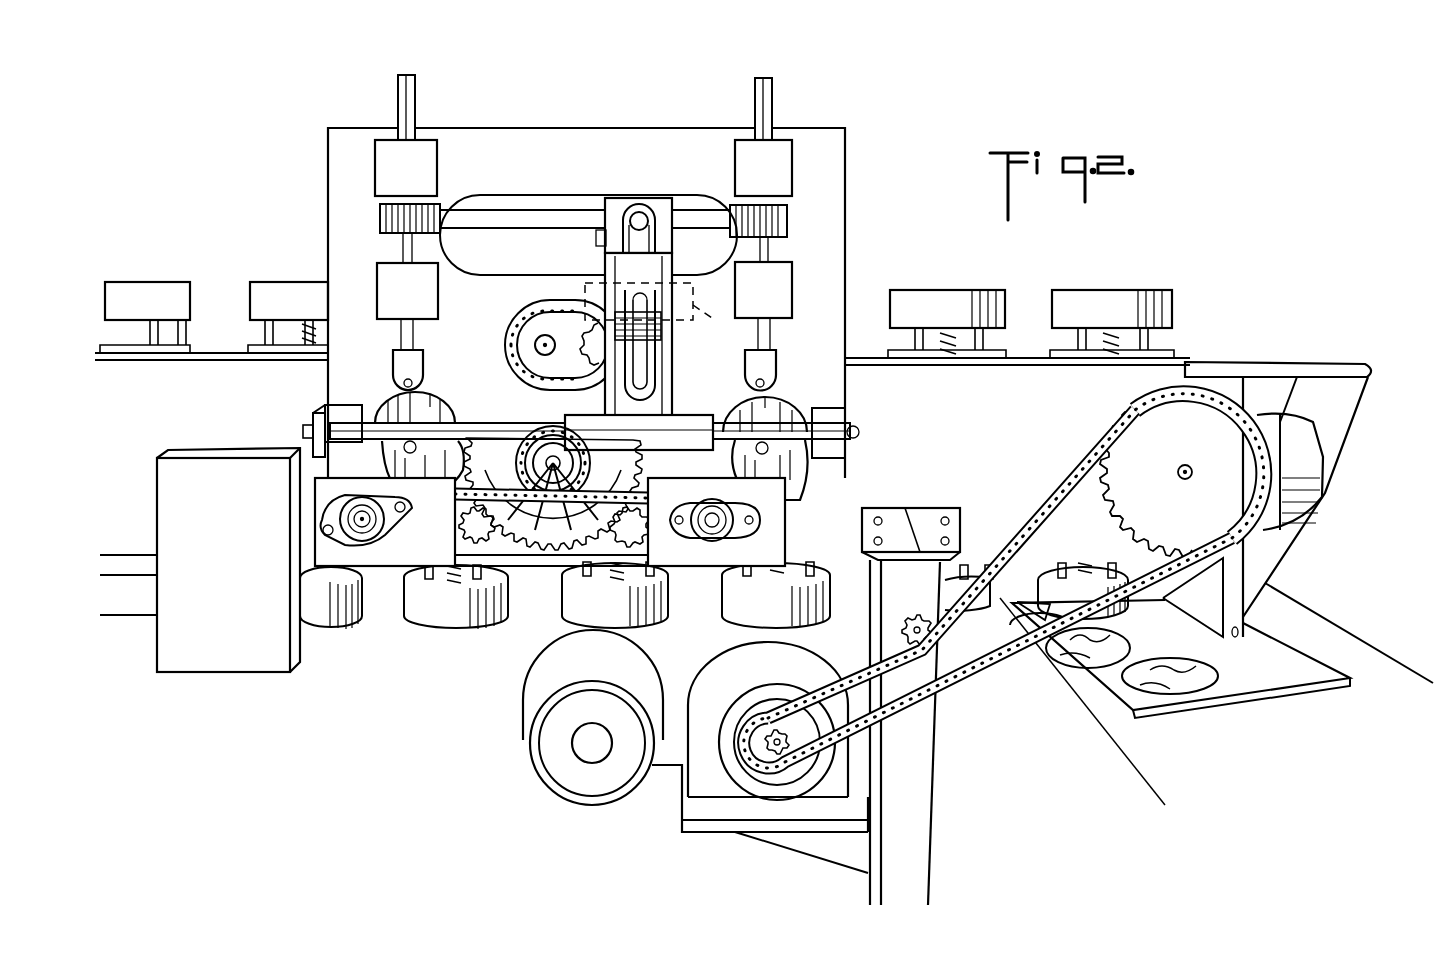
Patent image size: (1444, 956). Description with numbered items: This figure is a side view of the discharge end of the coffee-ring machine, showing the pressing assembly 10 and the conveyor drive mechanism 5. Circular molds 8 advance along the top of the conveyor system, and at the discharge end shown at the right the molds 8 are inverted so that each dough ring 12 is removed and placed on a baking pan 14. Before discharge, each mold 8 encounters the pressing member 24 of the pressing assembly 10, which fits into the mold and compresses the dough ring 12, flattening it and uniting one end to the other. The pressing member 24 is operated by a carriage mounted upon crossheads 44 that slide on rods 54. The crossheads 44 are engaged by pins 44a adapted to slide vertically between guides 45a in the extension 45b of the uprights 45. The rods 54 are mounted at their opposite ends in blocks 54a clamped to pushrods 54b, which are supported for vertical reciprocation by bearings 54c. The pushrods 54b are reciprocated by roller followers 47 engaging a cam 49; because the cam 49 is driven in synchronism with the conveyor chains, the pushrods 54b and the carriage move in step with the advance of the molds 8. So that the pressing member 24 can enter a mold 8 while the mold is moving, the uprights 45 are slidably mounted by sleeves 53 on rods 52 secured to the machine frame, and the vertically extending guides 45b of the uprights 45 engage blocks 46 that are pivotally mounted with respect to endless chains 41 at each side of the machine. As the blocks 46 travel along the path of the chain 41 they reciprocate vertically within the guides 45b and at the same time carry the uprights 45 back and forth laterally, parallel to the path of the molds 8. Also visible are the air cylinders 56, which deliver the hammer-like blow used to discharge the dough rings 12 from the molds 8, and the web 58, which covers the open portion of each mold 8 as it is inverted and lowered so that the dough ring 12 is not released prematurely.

The drive mechanism 5 is at (970, 676).
The circular molds 8 is at (218, 266).
The pressing assembly 10 is at (516, 128).
The dough rings 12 is at (673, 103).
The baking pan 14 is at (1303, 658).
The pressing member 24 is at (600, 256).
The endless chains 41 is at (512, 332).
The crossheads 44 is at (604, 215).
The pins 44a is at (642, 218).
The uprights 45 is at (684, 405).
The guides 45a is at (598, 238).
The extension 45b is at (617, 200).
The blocks 46 is at (640, 338).
The roller followers 47 is at (397, 360).
The cam 49 is at (430, 420).
The rods 52 is at (482, 428).
The sleeves 53 is at (572, 418).
The rods 54 is at (512, 210).
The blocks 54a is at (385, 216).
The pushrods 54b is at (410, 84).
The bearings 54c is at (780, 178).
The air cylinders 56 is at (405, 248).
The web 58 is at (772, 250).